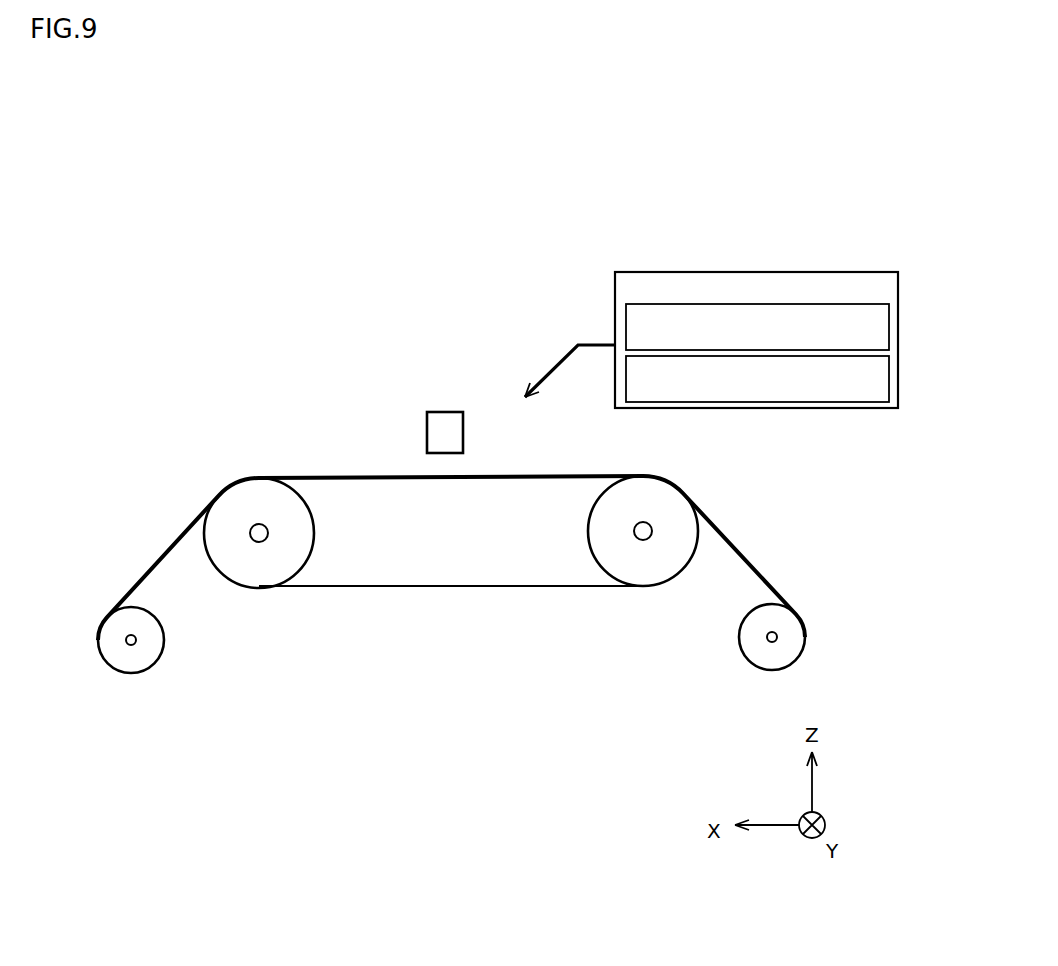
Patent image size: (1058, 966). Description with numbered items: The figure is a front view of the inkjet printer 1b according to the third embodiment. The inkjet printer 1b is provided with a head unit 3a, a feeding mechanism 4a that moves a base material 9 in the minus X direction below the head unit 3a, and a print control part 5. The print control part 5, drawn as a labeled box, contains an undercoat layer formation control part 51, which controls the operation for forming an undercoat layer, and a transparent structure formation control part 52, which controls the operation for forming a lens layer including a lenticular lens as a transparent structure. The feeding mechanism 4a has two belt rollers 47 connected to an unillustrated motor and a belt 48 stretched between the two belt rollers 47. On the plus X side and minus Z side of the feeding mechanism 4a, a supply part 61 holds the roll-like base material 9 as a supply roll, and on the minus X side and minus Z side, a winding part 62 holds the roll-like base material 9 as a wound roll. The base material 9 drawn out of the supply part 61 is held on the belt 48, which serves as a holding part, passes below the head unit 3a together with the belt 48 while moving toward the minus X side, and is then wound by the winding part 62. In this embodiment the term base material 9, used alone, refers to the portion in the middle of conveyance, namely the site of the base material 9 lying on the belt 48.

The inkjet printer 1b is at (209, 371).
The head unit 3a is at (450, 411).
The print control part 5 is at (615, 288).
The undercoat layer formation control part 51 is at (626, 327).
The transparent structure formation control part 52 is at (846, 403).
The base material 9 is at (588, 476).
The feeding mechanism 4a is at (461, 608).
The belt rollers 47 is at (258, 550).
The belt 48 is at (323, 588).
The supply part 61 is at (158, 686).
The winding part 62 is at (749, 690).